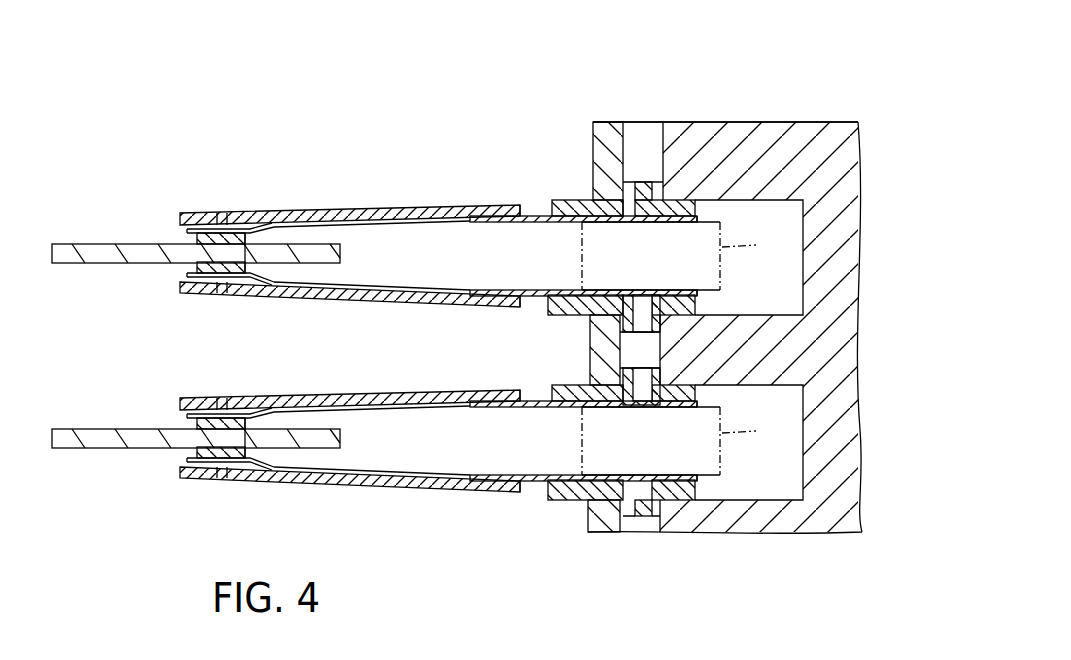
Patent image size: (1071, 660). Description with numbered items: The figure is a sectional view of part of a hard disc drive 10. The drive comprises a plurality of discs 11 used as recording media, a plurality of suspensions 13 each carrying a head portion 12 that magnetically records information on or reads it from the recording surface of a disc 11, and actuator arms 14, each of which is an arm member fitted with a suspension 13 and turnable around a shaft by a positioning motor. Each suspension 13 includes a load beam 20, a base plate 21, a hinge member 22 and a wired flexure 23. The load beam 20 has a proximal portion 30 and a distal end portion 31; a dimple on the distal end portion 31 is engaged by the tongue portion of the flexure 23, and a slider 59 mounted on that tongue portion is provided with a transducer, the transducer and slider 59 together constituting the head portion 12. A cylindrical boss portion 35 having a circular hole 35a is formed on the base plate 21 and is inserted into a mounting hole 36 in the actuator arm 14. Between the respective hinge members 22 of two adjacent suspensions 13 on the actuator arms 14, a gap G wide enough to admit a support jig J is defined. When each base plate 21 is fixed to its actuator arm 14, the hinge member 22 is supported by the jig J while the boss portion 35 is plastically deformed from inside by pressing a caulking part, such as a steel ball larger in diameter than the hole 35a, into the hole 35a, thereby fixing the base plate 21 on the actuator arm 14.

The hard disc drive 10 is at (761, 90).
The disc 11 is at (84, 243).
The head portion 12 is at (177, 200).
The suspension 13 is at (419, 184).
The actuator arm 14 is at (705, 121).
The load beam 20 is at (335, 212).
The base plate 21 is at (553, 200).
The hinge member 22 is at (505, 289).
The wired flexure 23 is at (361, 226).
The proximal portion 30 is at (490, 206).
The distal end portion 31 is at (238, 212).
The boss portion 35 is at (697, 201).
The circular hole 35a is at (636, 198).
The mounting hole 36 is at (630, 136).
The slider 59 is at (187, 231).